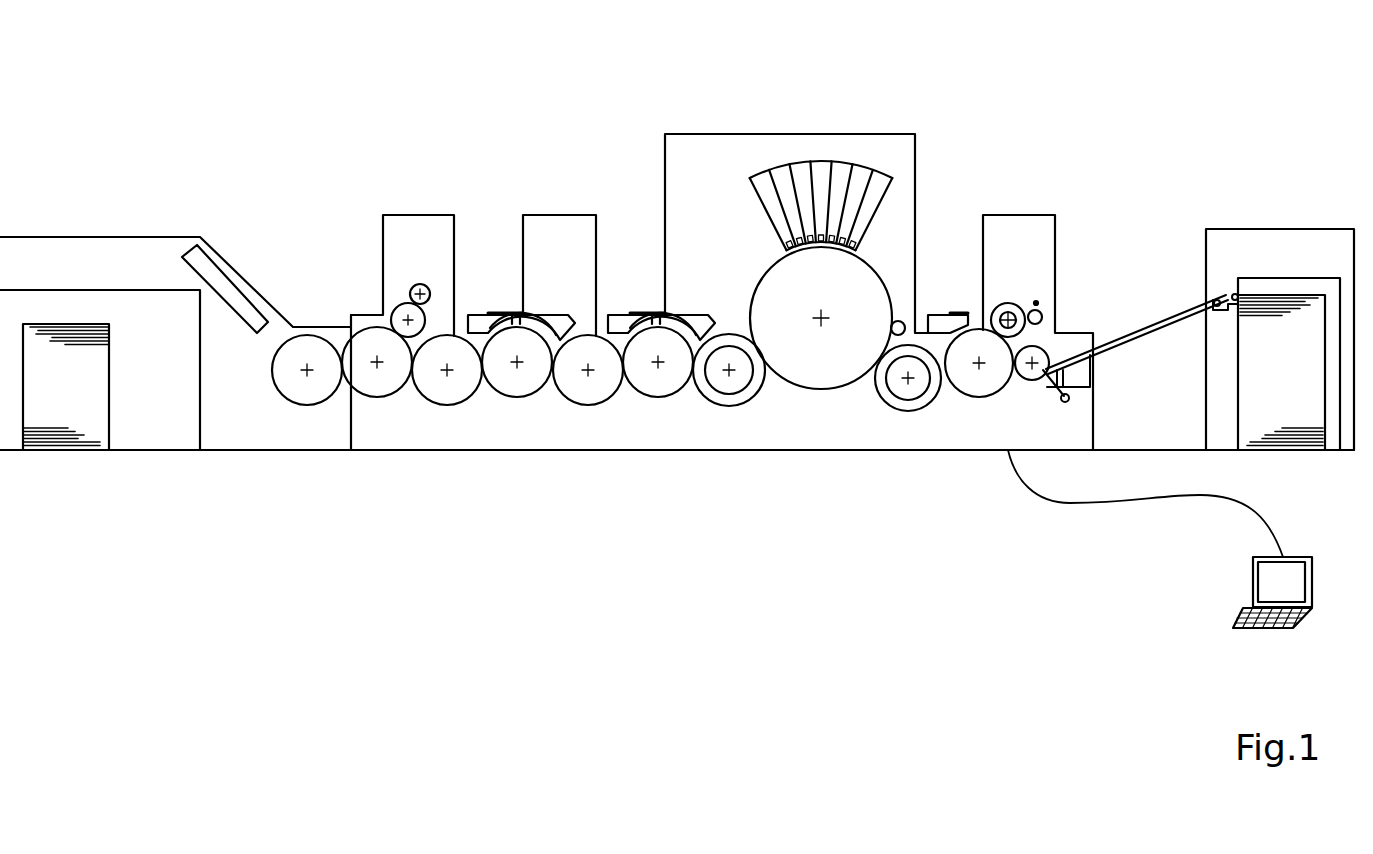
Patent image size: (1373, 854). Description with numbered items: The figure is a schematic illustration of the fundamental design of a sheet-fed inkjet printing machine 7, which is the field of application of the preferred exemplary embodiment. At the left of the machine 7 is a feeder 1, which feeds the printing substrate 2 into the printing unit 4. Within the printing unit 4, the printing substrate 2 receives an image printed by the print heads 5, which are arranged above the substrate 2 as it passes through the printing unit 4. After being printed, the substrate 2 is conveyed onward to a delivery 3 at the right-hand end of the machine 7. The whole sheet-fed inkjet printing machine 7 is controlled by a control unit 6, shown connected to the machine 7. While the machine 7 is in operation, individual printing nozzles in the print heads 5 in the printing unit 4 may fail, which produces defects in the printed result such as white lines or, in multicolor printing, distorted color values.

The feeder 1 is at (104, 263).
The printing substrate 2 is at (880, 272).
The delivery 3 is at (1292, 295).
The printing unit 4 is at (727, 134).
The print heads 5 is at (822, 160).
The control unit 6 is at (1252, 583).
The inkjet printing machine 7 is at (1142, 52).